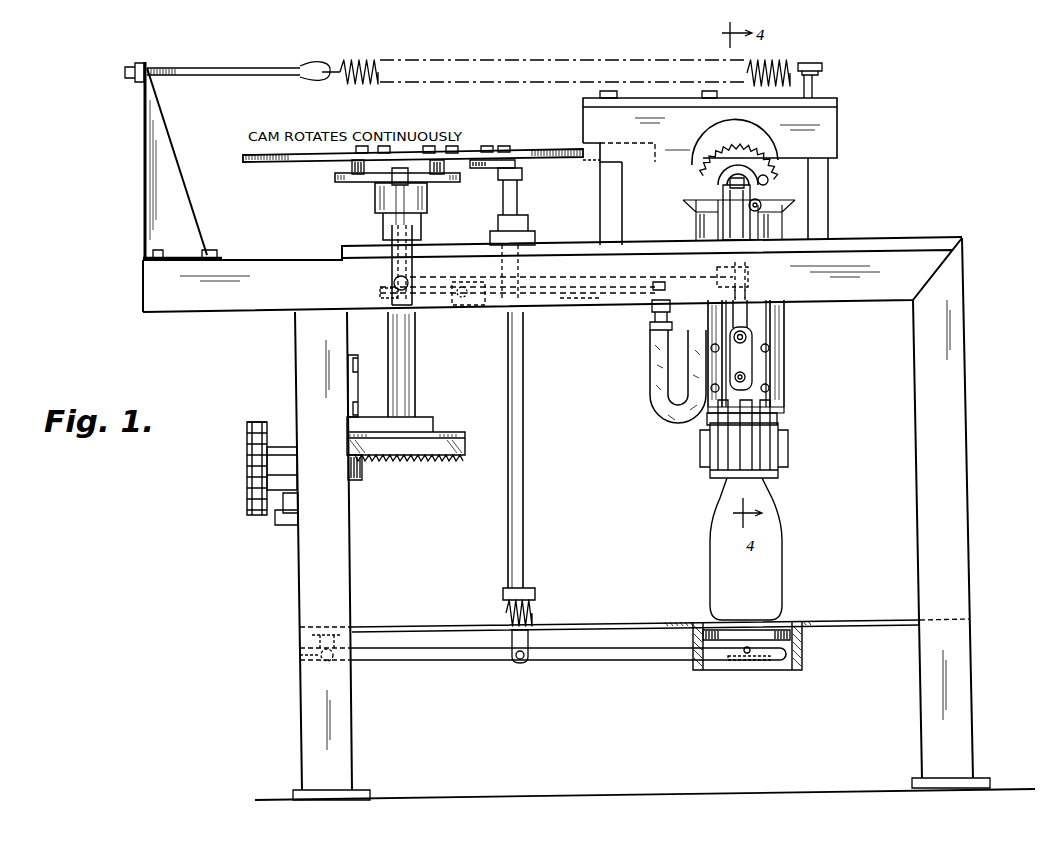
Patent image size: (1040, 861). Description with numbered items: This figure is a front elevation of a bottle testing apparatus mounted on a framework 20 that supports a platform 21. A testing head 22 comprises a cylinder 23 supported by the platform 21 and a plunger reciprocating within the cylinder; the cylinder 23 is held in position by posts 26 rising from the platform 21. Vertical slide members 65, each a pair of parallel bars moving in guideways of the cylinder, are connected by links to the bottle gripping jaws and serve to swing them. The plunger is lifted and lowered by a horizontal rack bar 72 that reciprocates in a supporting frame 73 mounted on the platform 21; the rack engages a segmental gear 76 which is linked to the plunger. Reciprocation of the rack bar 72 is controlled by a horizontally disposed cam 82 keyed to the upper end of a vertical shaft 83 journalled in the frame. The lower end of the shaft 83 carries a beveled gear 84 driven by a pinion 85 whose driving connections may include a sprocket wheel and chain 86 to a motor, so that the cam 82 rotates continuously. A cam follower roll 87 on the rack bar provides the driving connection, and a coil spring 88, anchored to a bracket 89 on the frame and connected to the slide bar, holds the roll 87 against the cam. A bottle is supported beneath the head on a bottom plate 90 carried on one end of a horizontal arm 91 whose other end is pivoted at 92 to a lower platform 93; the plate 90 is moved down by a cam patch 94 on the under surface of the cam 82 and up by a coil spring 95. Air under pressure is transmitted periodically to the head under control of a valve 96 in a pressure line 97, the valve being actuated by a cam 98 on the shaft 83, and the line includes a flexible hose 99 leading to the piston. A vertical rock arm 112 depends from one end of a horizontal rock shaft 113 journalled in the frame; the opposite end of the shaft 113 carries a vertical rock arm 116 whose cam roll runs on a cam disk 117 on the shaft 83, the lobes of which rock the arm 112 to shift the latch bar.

The framework 20 is at (918, 435).
The platform 21 is at (896, 240).
The testing head 22 is at (797, 346).
The cylinder 23 is at (785, 322).
The posts 26 is at (720, 186).
The vertical slide member 65 is at (760, 358).
The horizontal rack bar 72 is at (728, 142).
The supporting frame 73 is at (819, 186).
The segmental gear 76 is at (756, 162).
The cam 82 is at (554, 152).
The vertical shaft 83 is at (412, 386).
The beveled gear 84 is at (440, 462).
The pinion 85 is at (362, 472).
The sprocket wheel and chain 86 is at (258, 477).
The cam follower roll 87 is at (660, 158).
The coil spring 88 is at (363, 78).
The bracket 89 is at (158, 142).
The bottom plate 90 is at (786, 630).
The horizontal arm 91 is at (650, 660).
The pivot 92 is at (320, 658).
The lower platform 93 is at (454, 626).
The cam patch 94 is at (514, 164).
The coil spring 95 is at (534, 612).
The valve 96 is at (485, 306).
The pressure line 97 is at (578, 306).
The cam 98 is at (426, 306).
The flexible hose 99 is at (665, 386).
The rock arm 112 is at (746, 312).
The horizontal rock shaft 113 is at (632, 284).
The vertical rock arm 116 is at (396, 196).
The cam disk 117 is at (336, 178).